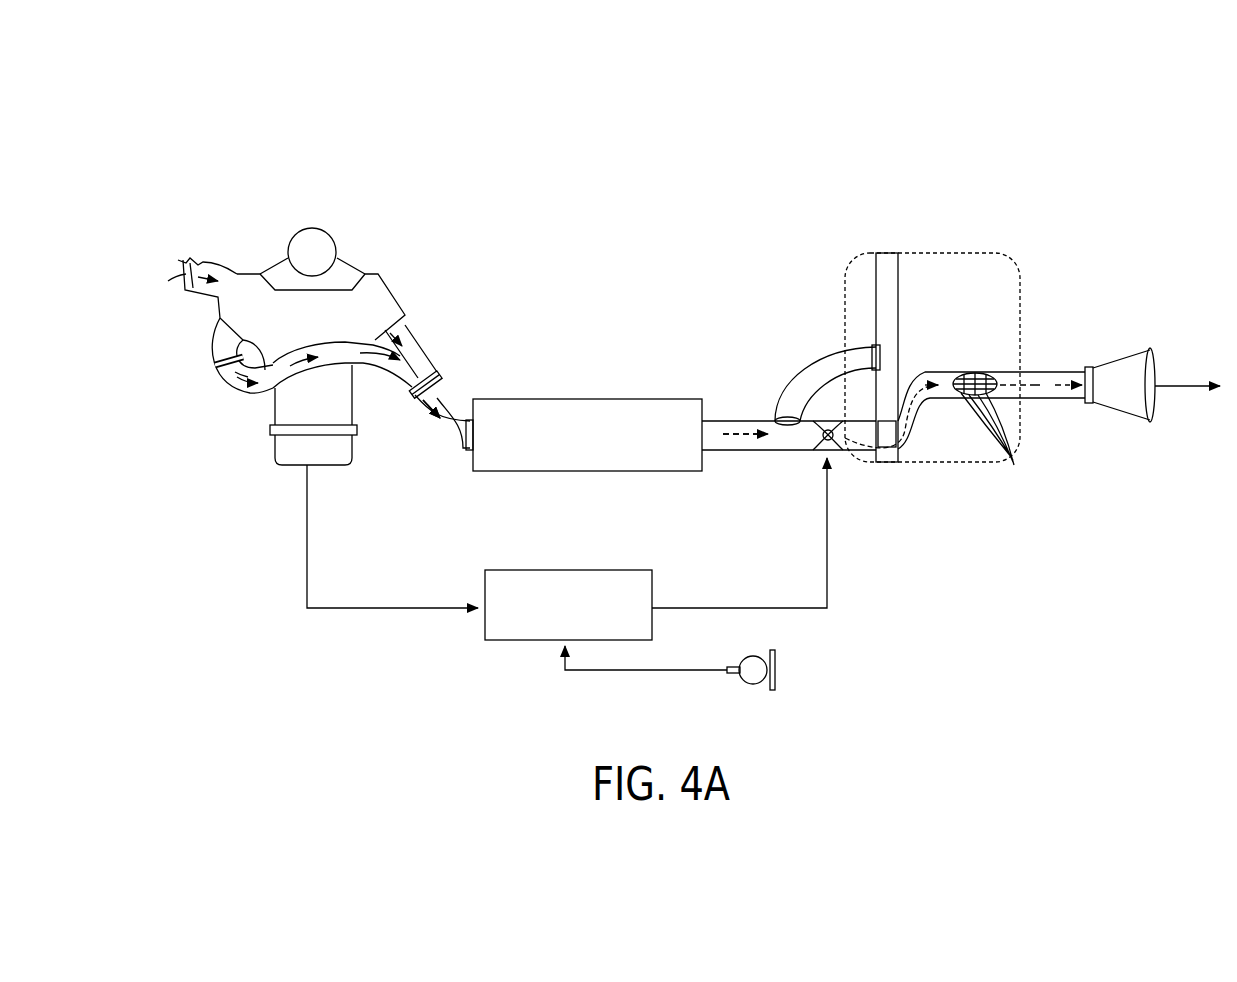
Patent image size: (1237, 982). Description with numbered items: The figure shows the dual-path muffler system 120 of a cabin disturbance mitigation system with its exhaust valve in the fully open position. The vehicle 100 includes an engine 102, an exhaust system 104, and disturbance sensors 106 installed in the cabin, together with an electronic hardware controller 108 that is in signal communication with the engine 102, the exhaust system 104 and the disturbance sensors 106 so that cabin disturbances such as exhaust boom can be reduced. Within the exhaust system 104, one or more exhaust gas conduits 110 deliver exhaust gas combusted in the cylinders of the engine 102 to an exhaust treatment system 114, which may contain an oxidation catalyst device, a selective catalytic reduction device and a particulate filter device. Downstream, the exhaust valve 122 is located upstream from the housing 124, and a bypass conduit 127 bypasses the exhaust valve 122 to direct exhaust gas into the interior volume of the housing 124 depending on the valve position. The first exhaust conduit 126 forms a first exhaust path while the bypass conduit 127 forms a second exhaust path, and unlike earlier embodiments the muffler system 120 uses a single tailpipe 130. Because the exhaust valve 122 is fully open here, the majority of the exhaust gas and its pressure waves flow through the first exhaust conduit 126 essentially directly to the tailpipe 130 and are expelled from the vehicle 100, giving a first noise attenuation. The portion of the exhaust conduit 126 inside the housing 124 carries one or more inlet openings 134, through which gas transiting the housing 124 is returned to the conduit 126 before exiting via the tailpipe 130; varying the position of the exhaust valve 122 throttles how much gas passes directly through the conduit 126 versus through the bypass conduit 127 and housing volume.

The vehicle 100 is at (378, 144).
The engine 102 is at (266, 408).
The exhaust system 104 is at (628, 233).
The disturbance sensors 106 is at (756, 674).
The electronic hardware controller 108 is at (580, 570).
The exhaust gas conduits 110 is at (418, 358).
The exhaust treatment system 114 is at (590, 398).
The dual-path muffler system 120 is at (938, 188).
The exhaust valve 122 is at (845, 458).
The housing 124 is at (936, 470).
The first exhaust conduit 126 is at (947, 374).
The bypass conduit 127 is at (812, 375).
The tailpipe 130 is at (1118, 372).
The inlet openings 134 is at (1013, 462).